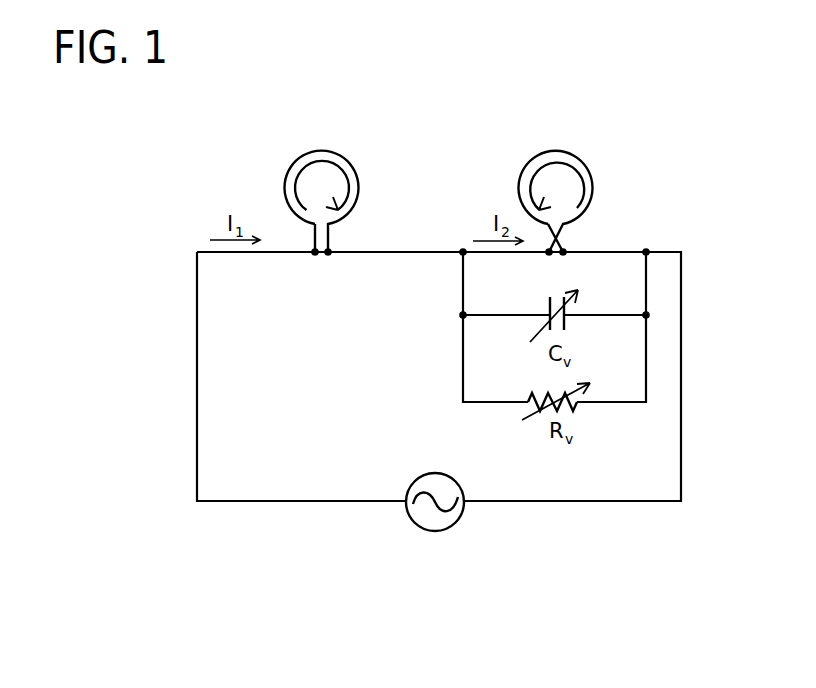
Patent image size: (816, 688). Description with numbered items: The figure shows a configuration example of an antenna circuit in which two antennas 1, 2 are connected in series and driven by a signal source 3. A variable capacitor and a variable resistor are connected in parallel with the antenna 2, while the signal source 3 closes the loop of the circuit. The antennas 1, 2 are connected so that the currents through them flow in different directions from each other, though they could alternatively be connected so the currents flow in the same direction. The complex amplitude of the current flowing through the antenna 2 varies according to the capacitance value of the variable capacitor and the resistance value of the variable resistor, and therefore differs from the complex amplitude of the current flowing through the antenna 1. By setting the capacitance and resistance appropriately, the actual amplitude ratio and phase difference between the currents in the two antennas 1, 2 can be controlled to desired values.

The antenna 1 is at (325, 152).
The antenna 2 is at (557, 153).
The signal source 3 is at (436, 531).